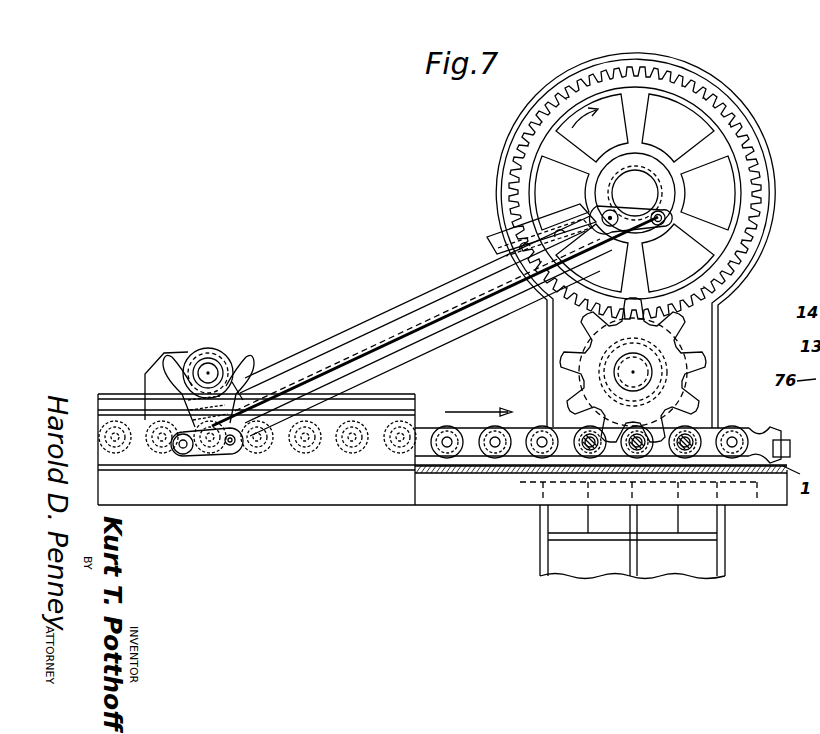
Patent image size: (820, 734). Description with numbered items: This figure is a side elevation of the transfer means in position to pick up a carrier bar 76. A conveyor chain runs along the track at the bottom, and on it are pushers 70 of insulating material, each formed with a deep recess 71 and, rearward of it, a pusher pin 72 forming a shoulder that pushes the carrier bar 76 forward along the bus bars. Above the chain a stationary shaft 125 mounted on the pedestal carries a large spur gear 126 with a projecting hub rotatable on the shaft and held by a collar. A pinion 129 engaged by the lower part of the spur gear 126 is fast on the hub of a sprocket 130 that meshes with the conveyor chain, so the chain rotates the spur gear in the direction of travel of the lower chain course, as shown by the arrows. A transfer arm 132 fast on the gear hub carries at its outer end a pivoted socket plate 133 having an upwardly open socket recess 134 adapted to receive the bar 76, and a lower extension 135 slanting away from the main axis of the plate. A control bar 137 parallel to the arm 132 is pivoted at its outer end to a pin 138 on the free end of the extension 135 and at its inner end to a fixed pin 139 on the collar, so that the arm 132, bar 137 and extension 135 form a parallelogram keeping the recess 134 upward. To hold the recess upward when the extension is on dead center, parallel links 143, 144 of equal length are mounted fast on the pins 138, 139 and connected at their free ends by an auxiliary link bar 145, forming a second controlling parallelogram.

The pusher 70 is at (146, 374).
The deep recess 71 is at (165, 410).
The pusher pin 72 is at (183, 350).
The carrier bar 76 is at (214, 352).
The stationary shaft 125 is at (644, 183).
The spur gear 126 is at (757, 172).
The pinion 129 is at (683, 328).
The sprocket 130 is at (700, 355).
The transfer arm 132 is at (393, 305).
The socket plate 133 is at (243, 388).
The socket recess 134 is at (238, 365).
The lower extension 135 is at (98, 399).
The control bar 137 is at (340, 350).
The pin 138 is at (183, 456).
The fixed pin 139 is at (610, 228).
The parallel link 143 is at (232, 455).
The parallel link 144 is at (660, 226).
The auxiliary link bar 145 is at (418, 343).